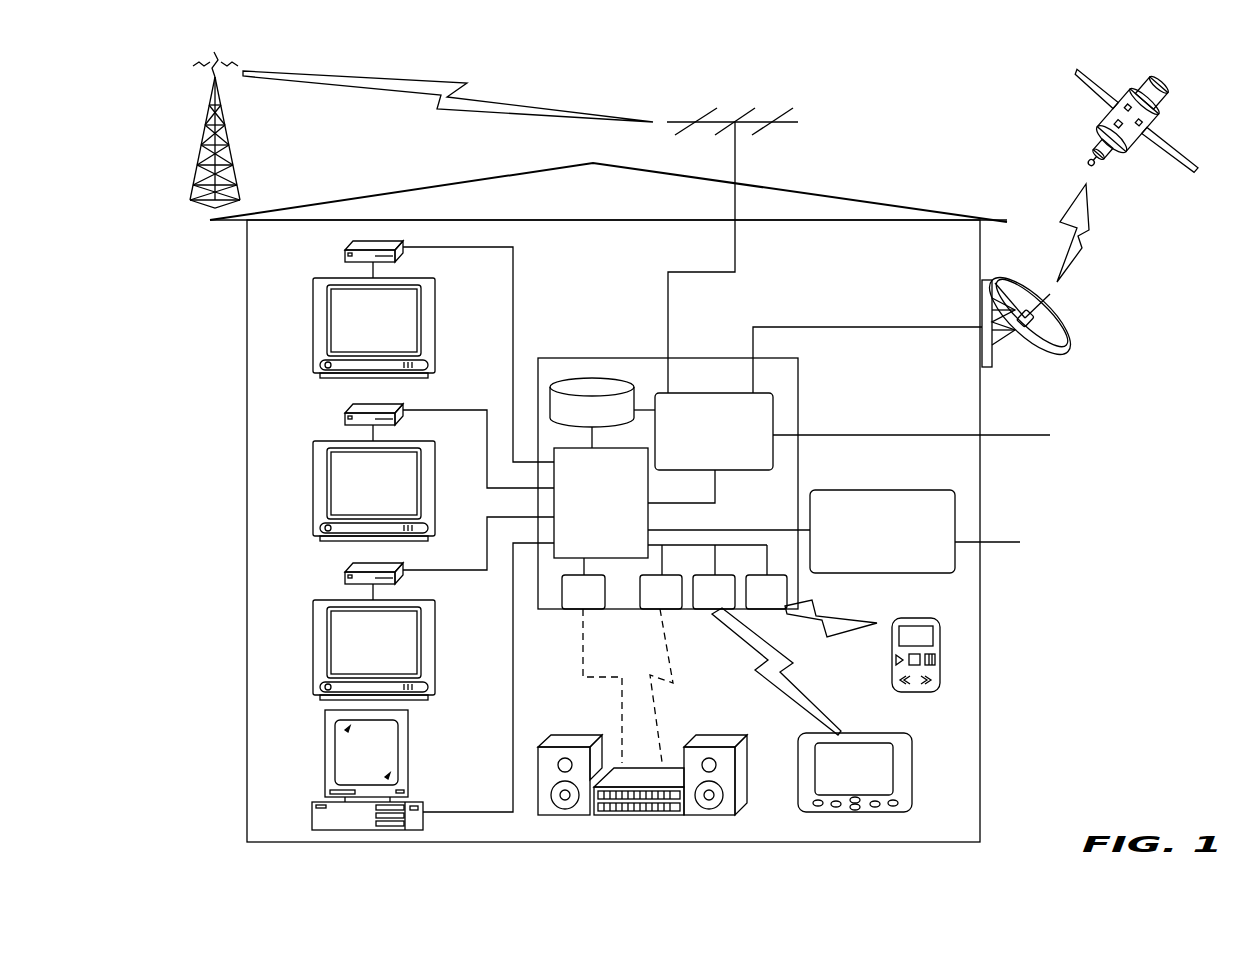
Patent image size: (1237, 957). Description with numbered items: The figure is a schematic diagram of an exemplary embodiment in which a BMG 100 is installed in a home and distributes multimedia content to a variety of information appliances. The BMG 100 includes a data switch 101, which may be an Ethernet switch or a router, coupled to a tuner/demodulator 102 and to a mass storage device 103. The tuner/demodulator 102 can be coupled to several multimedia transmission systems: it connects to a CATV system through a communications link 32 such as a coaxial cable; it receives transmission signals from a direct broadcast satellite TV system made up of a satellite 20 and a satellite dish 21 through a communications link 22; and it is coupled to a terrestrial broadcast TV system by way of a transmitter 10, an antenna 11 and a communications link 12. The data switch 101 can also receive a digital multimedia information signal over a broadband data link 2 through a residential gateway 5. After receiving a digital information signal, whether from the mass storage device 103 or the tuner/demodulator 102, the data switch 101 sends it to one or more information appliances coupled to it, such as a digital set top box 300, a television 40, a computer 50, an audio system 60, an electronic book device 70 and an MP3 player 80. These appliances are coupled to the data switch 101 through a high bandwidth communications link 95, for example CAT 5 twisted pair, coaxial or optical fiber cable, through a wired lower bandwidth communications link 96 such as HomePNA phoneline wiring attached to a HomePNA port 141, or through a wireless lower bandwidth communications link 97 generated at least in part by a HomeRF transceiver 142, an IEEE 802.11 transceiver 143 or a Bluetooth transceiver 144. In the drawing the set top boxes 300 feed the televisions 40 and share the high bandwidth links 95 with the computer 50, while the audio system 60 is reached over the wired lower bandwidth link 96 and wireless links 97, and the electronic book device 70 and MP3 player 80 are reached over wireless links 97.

The broadband data link 2 is at (963, 540).
The residential gateway 5 is at (920, 490).
The transmitter 10 is at (233, 158).
The antenna 11 is at (800, 121).
The communications link 12 is at (735, 268).
The satellite 20 is at (1155, 88).
The satellite dish 21 is at (1063, 340).
The communications link 22 is at (850, 327).
The communications link 32 is at (850, 435).
The television 40 is at (313, 322).
The computer 50 is at (325, 762).
The audio system 60 is at (743, 810).
The electronic book device 70 is at (849, 733).
The MP3 player 80 is at (915, 618).
The high bandwidth communications link 95 is at (513, 327).
The wired lower bandwidth communications link 96 is at (584, 659).
The wireless lower bandwidth communications link 97 is at (674, 677).
The BMG 100 is at (570, 358).
The data switch 101 is at (619, 524).
The tuner/demodulator 102 is at (732, 466).
The mass storage device 103 is at (611, 423).
The HomePNA port 141 is at (601, 605).
The HomeRF transceiver 142 is at (679, 605).
The IEEE 802.11 transceiver 143 is at (732, 605).
The Bluetooth transceiver 144 is at (784, 605).
The digital set top box 300 is at (344, 254).